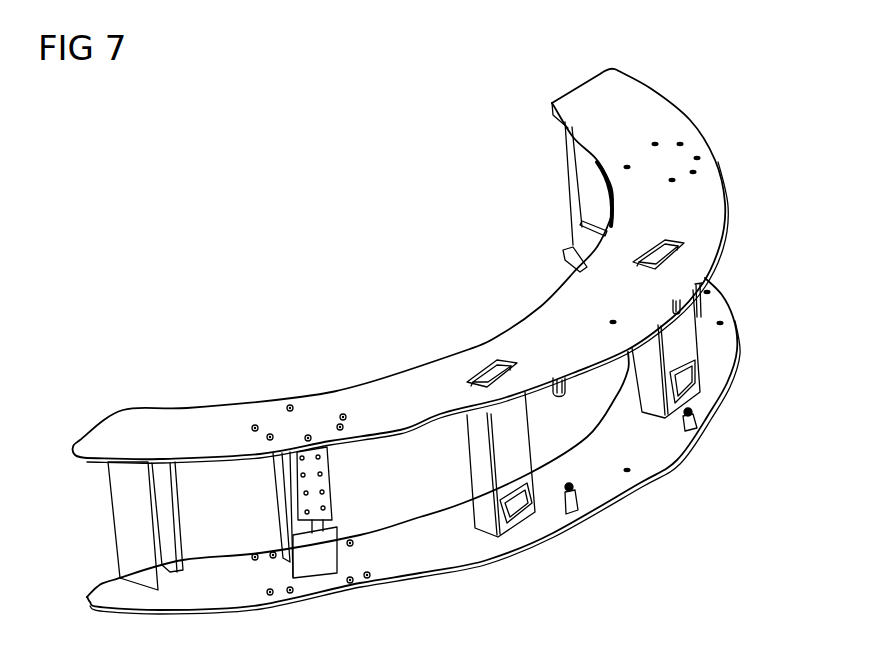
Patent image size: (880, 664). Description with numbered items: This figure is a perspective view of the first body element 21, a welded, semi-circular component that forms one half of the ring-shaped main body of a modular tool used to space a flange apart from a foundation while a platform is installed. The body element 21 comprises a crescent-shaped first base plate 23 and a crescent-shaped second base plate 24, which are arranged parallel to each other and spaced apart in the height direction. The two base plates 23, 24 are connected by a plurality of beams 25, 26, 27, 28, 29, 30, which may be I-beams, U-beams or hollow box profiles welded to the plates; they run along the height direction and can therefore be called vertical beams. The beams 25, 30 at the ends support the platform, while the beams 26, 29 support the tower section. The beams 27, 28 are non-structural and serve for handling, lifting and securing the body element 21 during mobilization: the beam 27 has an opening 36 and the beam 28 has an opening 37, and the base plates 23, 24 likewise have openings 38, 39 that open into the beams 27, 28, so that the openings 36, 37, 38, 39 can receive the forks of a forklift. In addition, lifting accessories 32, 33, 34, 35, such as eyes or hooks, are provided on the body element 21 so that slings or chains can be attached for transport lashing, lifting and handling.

The first body element 21 is at (402, 158).
The first base plate 23 is at (640, 90).
The second base plate 24 is at (452, 585).
The beam 25 is at (573, 175).
The beam 26 is at (698, 285).
The beam 27 is at (710, 356).
The beam 28 is at (498, 480).
The beam 29 is at (307, 572).
The beam 30 is at (110, 521).
The lifting accessory 32 is at (694, 418).
The lifting accessory 33 is at (681, 302).
The lifting accessory 34 is at (580, 500).
The lifting accessory 35 is at (563, 394).
The opening 36 is at (689, 380).
The opening 37 is at (514, 512).
The opening 38 is at (480, 367).
The opening 39 is at (645, 250).